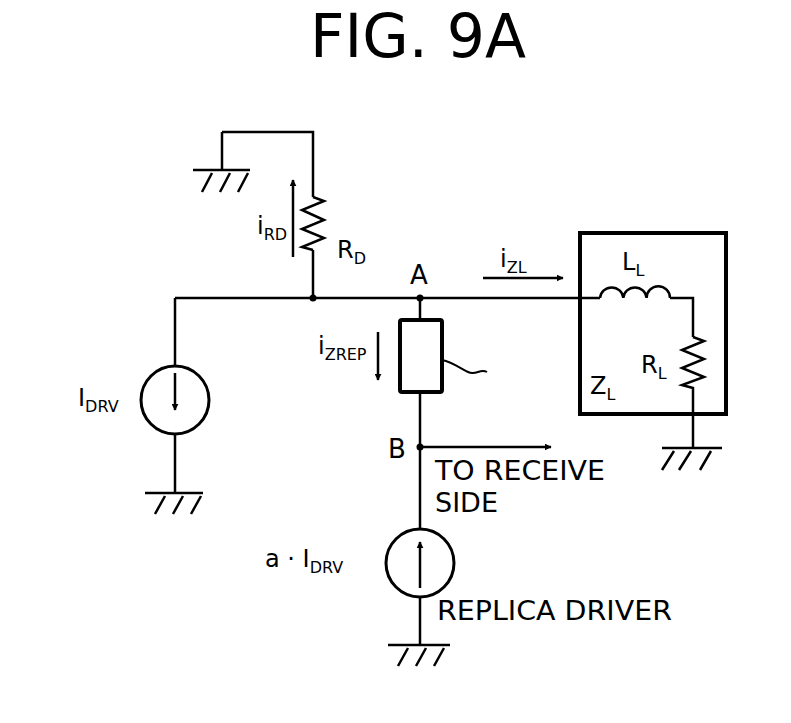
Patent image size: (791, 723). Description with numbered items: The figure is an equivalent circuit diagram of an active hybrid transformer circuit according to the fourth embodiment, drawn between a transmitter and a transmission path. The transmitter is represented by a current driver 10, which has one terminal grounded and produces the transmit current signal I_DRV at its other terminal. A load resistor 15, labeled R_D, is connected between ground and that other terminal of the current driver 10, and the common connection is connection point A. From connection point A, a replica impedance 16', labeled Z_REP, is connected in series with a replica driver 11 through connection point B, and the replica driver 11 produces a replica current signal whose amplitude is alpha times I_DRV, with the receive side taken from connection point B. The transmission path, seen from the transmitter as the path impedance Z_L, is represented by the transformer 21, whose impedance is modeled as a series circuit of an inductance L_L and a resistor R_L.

The load resistor 15 is at (340, 220).
The current driver 10 is at (208, 389).
The replica impedance 16' is at (469, 352).
The transformer 21 is at (678, 232).
The replica driver 11 is at (392, 582).